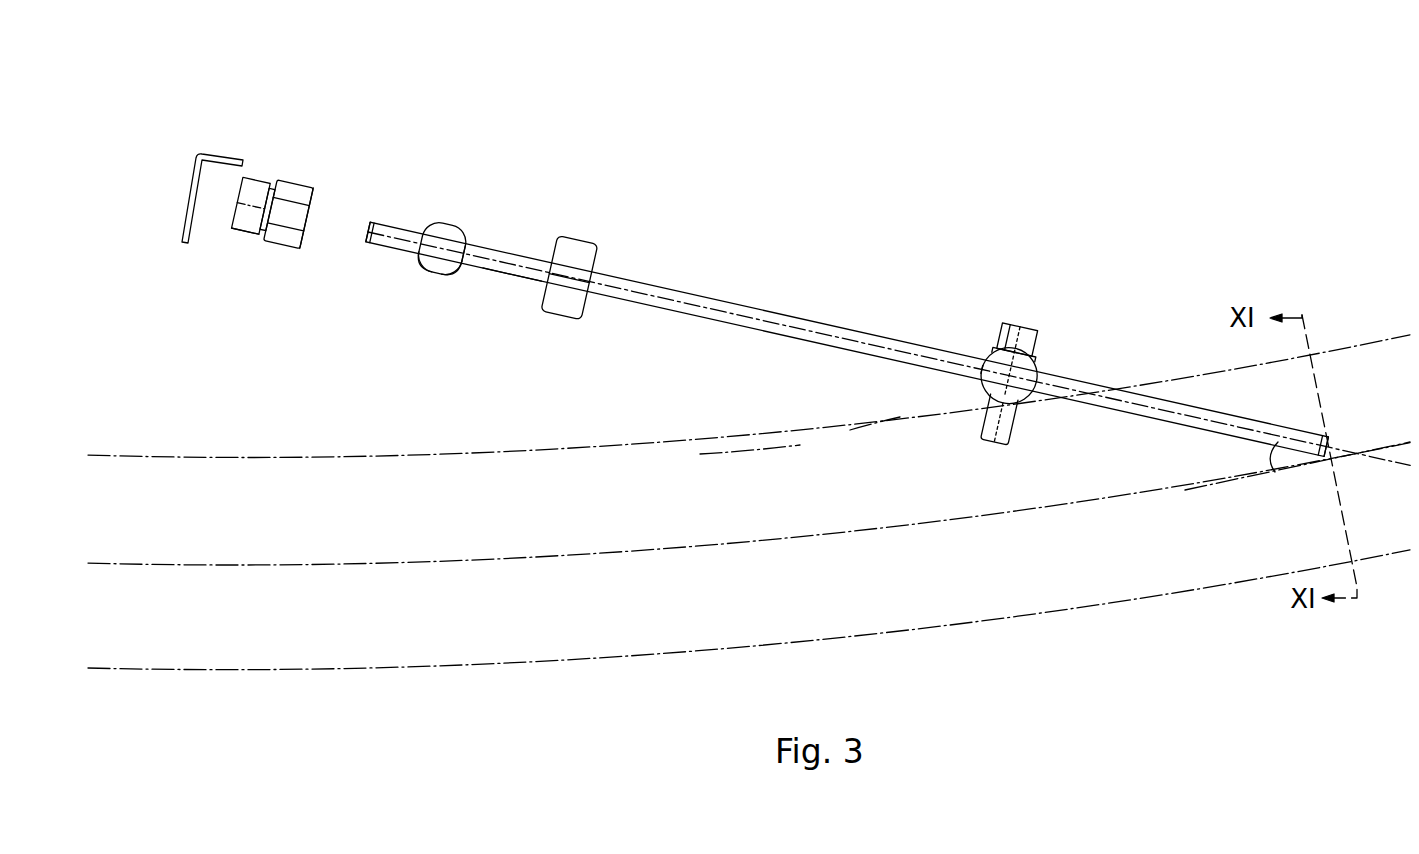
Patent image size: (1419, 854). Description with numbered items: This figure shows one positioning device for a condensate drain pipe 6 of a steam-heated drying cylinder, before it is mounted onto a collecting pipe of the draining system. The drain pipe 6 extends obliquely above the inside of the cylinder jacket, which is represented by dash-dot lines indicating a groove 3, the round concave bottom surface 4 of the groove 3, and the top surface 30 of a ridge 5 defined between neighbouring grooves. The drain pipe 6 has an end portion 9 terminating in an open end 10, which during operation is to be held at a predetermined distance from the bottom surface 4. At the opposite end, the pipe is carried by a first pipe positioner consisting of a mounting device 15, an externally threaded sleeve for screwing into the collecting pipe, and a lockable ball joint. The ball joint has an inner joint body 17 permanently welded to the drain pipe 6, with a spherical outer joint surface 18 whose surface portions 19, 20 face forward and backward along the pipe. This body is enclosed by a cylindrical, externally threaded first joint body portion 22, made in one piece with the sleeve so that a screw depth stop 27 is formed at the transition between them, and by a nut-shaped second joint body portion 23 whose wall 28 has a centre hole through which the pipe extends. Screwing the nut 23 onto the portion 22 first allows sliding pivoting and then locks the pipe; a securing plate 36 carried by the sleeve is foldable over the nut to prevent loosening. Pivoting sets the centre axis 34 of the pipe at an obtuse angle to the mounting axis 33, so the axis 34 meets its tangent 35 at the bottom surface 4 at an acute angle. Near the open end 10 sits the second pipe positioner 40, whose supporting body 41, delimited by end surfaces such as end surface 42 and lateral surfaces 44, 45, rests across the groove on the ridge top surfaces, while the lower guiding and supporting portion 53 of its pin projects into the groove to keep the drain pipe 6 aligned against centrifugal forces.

The groove 3 is at (722, 460).
The bottom surface 4 is at (858, 531).
The ridge 5 is at (795, 457).
The drain pipe 6 is at (689, 293).
The end portion 9 is at (378, 246).
The open end 10 is at (369, 224).
The mounting device 15 is at (247, 233).
The inner joint body 17 is at (453, 226).
The outer joint surface 18 is at (464, 240).
The surface portion 19 is at (420, 265).
The surface portion 20 is at (453, 268).
The first joint body portion 22 is at (287, 180).
The second joint body portion 23 is at (577, 245).
The screw depth stop 27 is at (271, 178).
The wall 28 is at (313, 194).
The top surface 30 is at (880, 421).
The mounting axis 33 is at (238, 207).
The centre axis 34 is at (505, 264).
The tangent 35 is at (1232, 481).
The securing plate 36 is at (212, 153).
The second pipe positioner 40 is at (1018, 372).
The supporting body 41 is at (982, 394).
The end surface 42 is at (1018, 397).
The lateral surface 44 is at (986, 356).
The lateral surface 45 is at (1038, 368).
The lower guiding and supporting portion 53 is at (1007, 441).